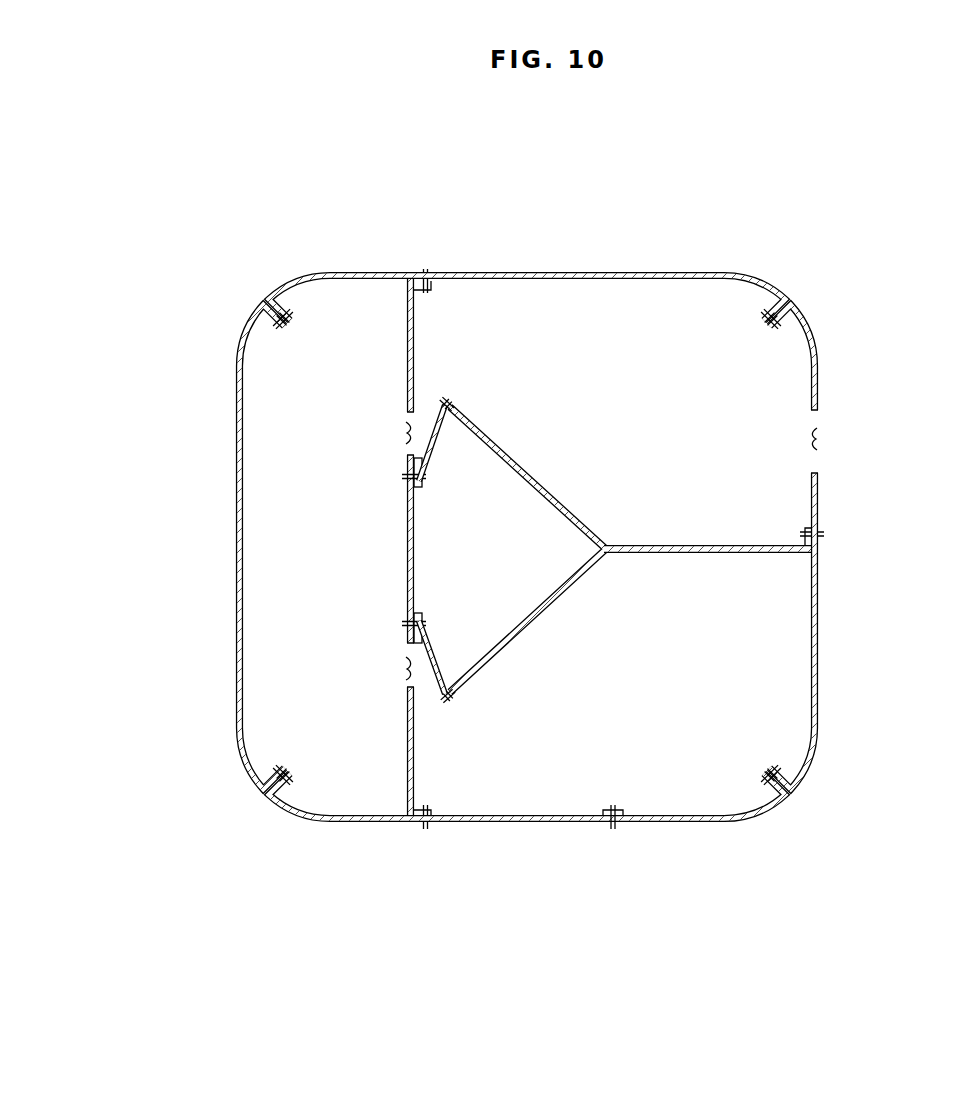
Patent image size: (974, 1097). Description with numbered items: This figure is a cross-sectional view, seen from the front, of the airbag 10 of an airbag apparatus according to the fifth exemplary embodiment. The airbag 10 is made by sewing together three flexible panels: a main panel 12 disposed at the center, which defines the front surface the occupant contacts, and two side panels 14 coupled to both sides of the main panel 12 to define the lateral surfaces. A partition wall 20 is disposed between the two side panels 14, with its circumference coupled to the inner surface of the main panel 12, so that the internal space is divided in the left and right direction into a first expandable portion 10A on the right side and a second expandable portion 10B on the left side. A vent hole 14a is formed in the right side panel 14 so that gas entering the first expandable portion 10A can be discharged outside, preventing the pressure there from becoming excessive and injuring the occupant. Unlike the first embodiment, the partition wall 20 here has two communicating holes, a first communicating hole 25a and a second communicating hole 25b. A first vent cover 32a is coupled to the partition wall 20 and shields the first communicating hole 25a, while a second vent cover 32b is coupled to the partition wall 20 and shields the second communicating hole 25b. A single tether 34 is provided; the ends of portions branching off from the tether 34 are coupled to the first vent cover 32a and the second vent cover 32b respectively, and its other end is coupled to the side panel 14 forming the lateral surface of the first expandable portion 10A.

The airbag 10 is at (530, 503).
The first expandable portion 10A is at (786, 650).
The second expandable portion 10B is at (284, 541).
The main panel 12 is at (493, 272).
The side panel 14 is at (234, 703).
The vent hole 14a is at (818, 434).
The partition wall 20 is at (408, 331).
The first communicating hole 25a is at (405, 670).
The second communicating hole 25b is at (405, 431).
The first vent cover 32a is at (433, 658).
The second vent cover 32b is at (434, 443).
The tether 34 is at (616, 528).